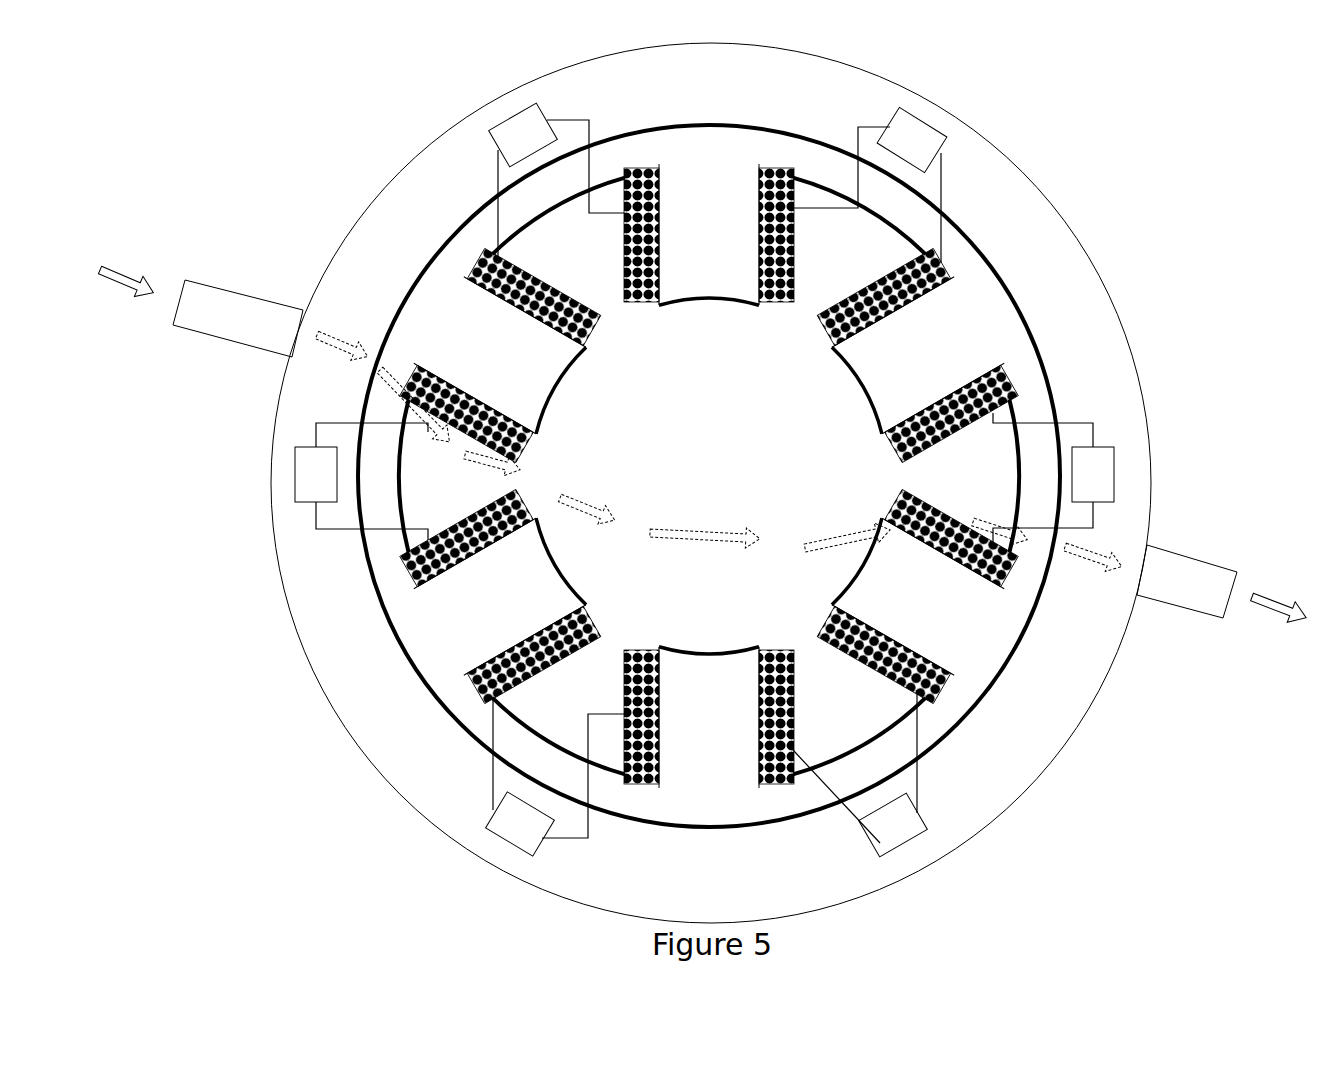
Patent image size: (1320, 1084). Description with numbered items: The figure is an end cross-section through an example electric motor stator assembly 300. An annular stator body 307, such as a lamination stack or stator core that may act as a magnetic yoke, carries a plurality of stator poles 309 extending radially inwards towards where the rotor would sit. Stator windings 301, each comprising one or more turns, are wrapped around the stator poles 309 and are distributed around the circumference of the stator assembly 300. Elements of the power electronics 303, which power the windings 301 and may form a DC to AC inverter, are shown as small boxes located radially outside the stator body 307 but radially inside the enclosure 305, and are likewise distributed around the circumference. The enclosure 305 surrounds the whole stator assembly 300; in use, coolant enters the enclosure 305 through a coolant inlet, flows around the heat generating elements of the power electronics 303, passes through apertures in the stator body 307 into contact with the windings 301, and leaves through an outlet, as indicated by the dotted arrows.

The stator assembly 300 is at (1132, 693).
The stator windings 301 is at (988, 373).
The power electronics 303 is at (518, 825).
The enclosure 305 is at (277, 440).
The stator body 307 is at (1010, 663).
The stator poles 309 is at (448, 608).